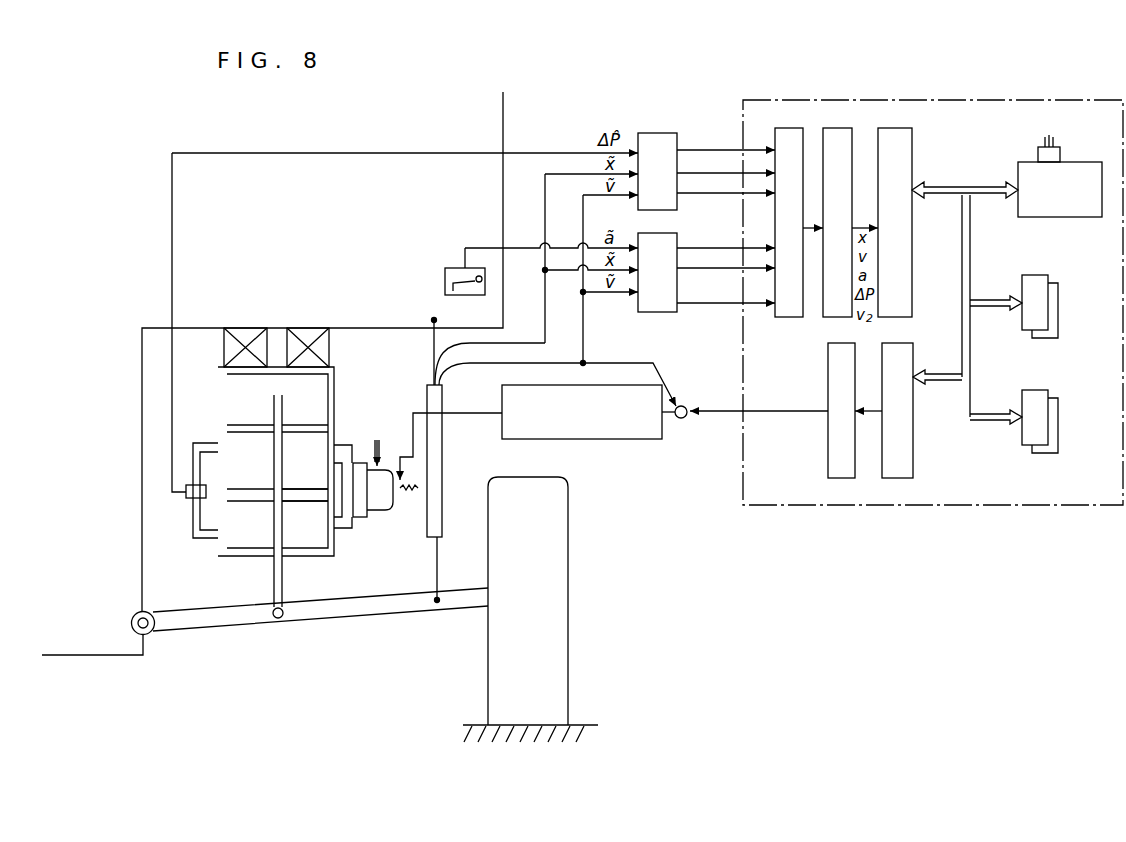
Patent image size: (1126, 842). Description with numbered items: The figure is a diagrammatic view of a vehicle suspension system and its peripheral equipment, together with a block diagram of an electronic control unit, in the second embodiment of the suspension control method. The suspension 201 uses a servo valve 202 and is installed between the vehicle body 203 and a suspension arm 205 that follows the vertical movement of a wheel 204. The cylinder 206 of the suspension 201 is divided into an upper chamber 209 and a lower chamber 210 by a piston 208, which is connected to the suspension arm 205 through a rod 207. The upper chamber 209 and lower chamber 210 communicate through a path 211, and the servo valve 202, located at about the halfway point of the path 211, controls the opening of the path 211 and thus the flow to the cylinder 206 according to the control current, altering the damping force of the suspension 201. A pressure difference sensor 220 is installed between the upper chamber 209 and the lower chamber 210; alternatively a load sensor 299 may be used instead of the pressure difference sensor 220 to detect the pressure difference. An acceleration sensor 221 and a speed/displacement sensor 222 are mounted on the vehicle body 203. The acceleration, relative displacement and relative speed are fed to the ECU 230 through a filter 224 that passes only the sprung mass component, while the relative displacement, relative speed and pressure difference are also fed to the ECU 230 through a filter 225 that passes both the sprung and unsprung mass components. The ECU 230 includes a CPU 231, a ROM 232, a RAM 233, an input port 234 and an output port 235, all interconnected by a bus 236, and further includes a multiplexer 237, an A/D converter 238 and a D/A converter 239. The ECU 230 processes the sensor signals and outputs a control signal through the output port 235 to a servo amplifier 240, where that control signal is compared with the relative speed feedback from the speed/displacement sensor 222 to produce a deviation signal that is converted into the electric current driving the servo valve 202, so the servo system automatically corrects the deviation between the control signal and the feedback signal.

The suspension 201 is at (205, 566).
The servo valve 202 is at (378, 511).
The vehicle body 203 is at (347, 326).
The wheel 204 is at (568, 583).
The suspension arm 205 is at (355, 615).
The cylinder 206 is at (218, 522).
The rod 207 is at (275, 522).
The piston 208 is at (237, 502).
The upper chamber 209 is at (235, 453).
The lower chamber 210 is at (315, 537).
The path 211 is at (348, 533).
The pressure difference sensor 220 is at (193, 497).
The acceleration sensor 221 is at (445, 282).
The speed/displacement sensor 222 is at (442, 463).
The filter 224 is at (658, 312).
The filter 225 is at (658, 133).
The ECU 230 is at (1028, 98).
The CPU 231 is at (1053, 218).
The ROM 232 is at (1058, 303).
The RAM 233 is at (1058, 418).
The input port 234 is at (912, 179).
The output port 235 is at (913, 358).
The bus 236 is at (970, 364).
The multiplexer 237 is at (805, 137).
The A/D converter 238 is at (855, 137).
The D/A converter 239 is at (828, 357).
The servo amplifier 240 is at (613, 440).
The load sensor 299 is at (332, 338).